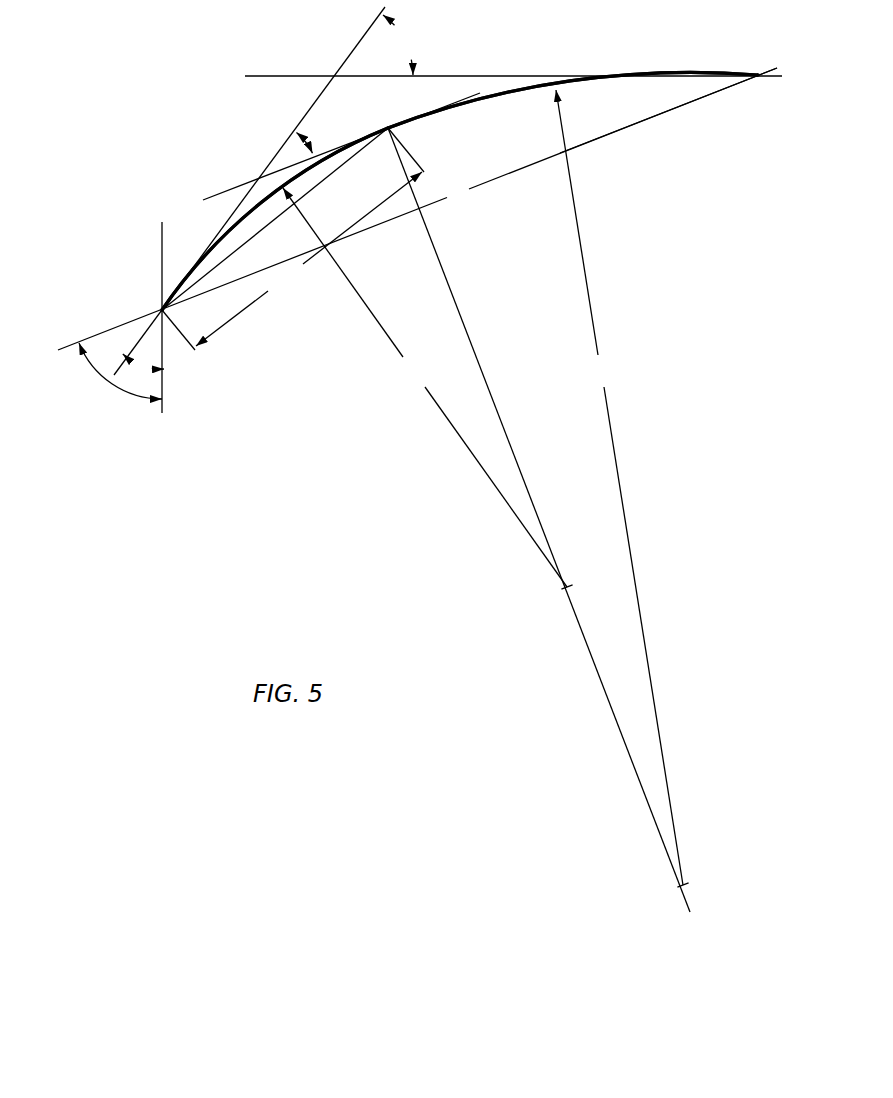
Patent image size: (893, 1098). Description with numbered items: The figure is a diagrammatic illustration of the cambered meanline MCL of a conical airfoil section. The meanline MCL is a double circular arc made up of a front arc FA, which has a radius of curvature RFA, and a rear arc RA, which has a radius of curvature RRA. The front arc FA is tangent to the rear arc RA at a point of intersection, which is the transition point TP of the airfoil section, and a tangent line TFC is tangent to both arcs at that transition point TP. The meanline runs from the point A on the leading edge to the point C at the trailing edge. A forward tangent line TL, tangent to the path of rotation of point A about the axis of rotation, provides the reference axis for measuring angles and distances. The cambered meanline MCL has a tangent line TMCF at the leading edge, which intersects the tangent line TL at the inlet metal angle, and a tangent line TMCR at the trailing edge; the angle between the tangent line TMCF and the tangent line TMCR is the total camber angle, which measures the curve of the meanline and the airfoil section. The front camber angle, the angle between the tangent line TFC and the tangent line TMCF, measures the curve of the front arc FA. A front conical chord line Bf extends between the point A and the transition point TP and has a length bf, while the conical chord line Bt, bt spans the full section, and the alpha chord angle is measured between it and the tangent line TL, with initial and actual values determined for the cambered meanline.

The cambered meanline MCL is at (515, 89).
The front arc FA is at (244, 219).
The rear arc RA is at (460, 108).
The tangent line at the trailing edge TMCR is at (268, 77).
The tangent line at the leading edge TMCF is at (368, 33).
The forward tangent line TL is at (160, 238).
The tangent line at the transition point TFC is at (232, 190).
The conical chord line bt is at (417, 209).
The conical chord line Bt is at (630, 126).
The front conical chord line Bf is at (329, 178).
The front chord line length bf is at (293, 239).
The radius of curvature of the front arc RFA is at (428, 388).
The radius of curvature of the rear arc RRA is at (622, 488).
The point on the leading edge A is at (168, 311).
The transition point TP is at (391, 126).
The point on the trailing edge C is at (761, 78).